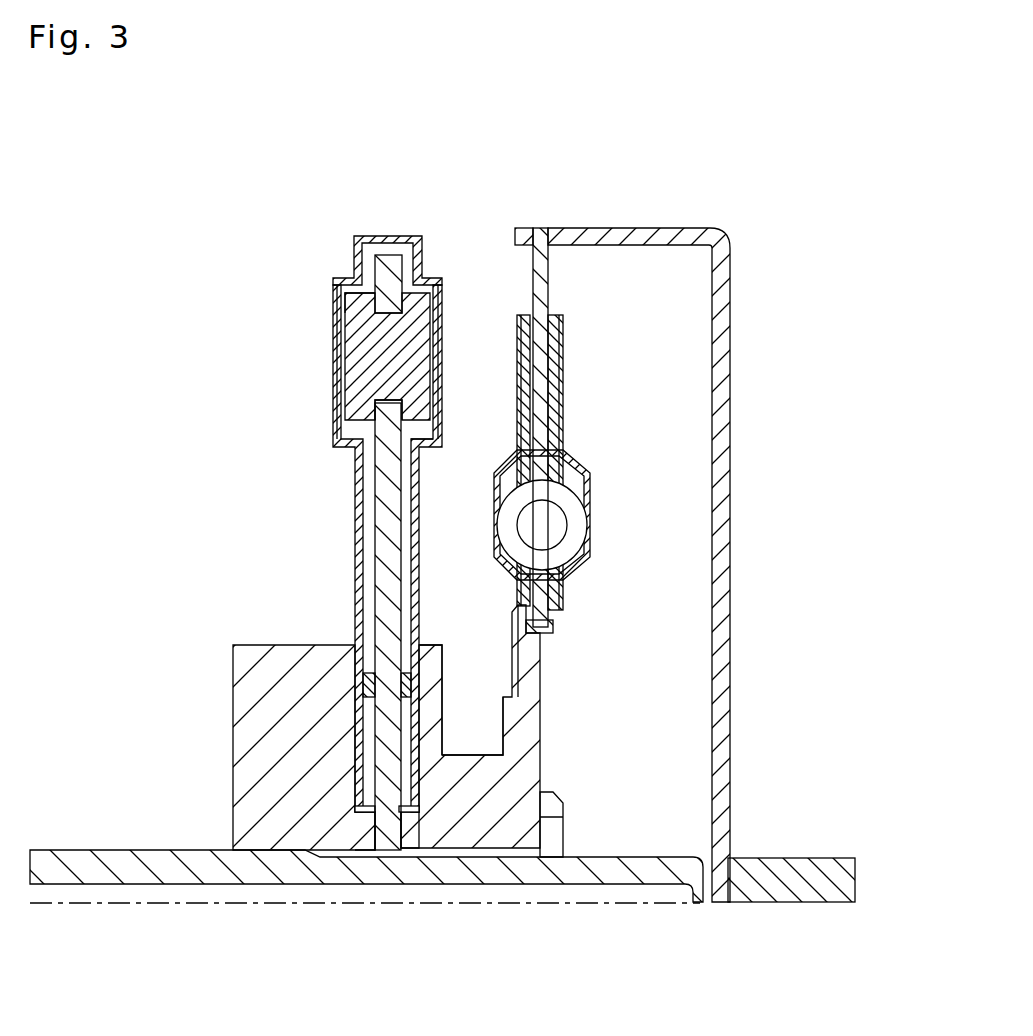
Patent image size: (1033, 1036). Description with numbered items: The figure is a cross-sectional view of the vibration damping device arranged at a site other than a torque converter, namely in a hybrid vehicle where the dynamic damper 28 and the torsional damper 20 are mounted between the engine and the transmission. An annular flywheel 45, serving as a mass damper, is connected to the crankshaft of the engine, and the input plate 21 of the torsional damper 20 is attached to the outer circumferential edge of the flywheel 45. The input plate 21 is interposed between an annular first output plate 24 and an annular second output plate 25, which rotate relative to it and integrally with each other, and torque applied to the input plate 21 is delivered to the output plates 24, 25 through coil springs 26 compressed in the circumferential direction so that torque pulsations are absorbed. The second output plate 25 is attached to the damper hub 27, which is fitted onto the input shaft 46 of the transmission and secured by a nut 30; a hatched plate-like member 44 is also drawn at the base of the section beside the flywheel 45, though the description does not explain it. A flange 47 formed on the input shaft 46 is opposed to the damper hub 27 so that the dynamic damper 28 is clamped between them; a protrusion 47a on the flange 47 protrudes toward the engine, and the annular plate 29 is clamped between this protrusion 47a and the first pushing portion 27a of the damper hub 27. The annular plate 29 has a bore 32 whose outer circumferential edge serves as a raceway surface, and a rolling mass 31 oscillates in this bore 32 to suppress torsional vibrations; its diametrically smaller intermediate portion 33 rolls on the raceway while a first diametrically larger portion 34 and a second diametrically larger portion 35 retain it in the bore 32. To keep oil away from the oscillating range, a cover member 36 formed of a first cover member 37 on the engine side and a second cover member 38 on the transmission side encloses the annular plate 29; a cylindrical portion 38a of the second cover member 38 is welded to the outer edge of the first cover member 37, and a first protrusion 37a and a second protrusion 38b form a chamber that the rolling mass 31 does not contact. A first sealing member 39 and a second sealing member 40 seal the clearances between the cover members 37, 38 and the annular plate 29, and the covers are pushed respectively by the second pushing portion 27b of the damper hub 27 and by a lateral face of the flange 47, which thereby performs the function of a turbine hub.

The torsional damper 20 is at (564, 430).
The input plate 21 is at (540, 288).
The first output plate 24 is at (558, 355).
The second output plate 25 is at (522, 350).
The coil springs 26 is at (578, 521).
The damper hub 27 is at (503, 781).
The first pushing portion 27a is at (408, 855).
The second pushing portion 27b is at (437, 700).
The dynamic damper 28 is at (383, 495).
The annular plate 29 is at (390, 528).
The nut 30 is at (556, 794).
The rolling mass 31 is at (426, 436).
The bore 32 is at (392, 410).
The intermediate portion 33 is at (386, 357).
The first diametrically larger portion 34 is at (415, 308).
The second diametrically larger portion 35 is at (356, 318).
The cover member 36 is at (406, 567).
The first cover member 37 is at (460, 548).
The first protrusion 37a is at (438, 370).
The second cover member 38 is at (314, 548).
The cylindrical portion 38a is at (390, 236).
The second protrusion 38b is at (337, 342).
The first sealing member 39 is at (430, 673).
The second sealing member 40 is at (368, 672).
The base plate 44 is at (795, 858).
The flywheel 45 is at (622, 228).
The input shaft 46 is at (333, 880).
The flange 47 is at (314, 772).
The protrusion 47a is at (365, 855).